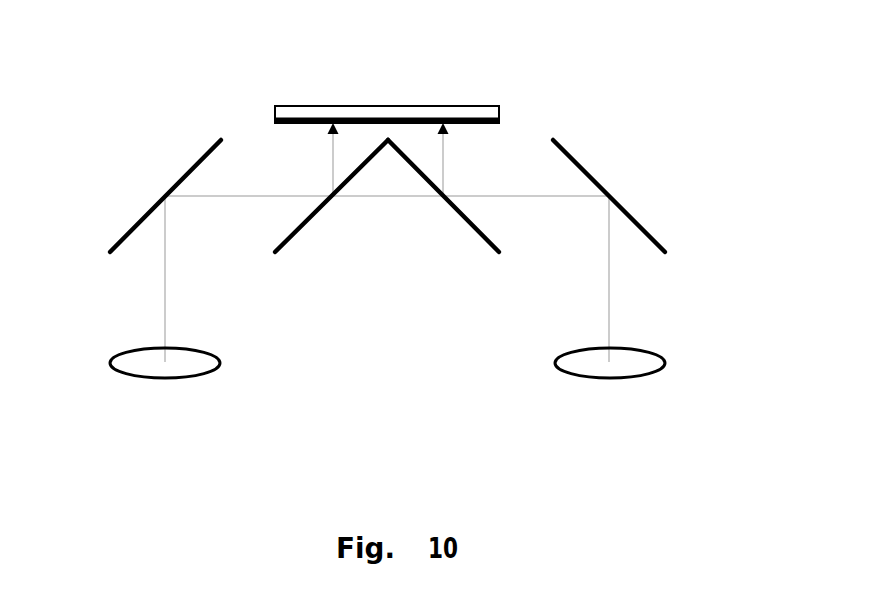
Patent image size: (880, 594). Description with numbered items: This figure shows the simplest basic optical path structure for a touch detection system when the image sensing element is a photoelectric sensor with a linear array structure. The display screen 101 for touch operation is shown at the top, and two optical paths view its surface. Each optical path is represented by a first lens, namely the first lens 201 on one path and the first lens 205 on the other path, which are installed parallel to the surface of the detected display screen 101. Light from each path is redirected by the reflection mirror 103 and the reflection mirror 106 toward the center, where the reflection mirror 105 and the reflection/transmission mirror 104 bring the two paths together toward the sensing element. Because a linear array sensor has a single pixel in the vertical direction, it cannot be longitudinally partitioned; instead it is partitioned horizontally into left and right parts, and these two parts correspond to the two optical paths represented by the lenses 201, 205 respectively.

The display screen 101 is at (388, 105).
The reflection mirror 103 is at (135, 224).
The reflection/transmission mirror 104 is at (304, 222).
The reflection mirror 105 is at (470, 222).
The reflection mirror 106 is at (644, 224).
The first lens 201 is at (110, 362).
The first lens 205 is at (665, 362).